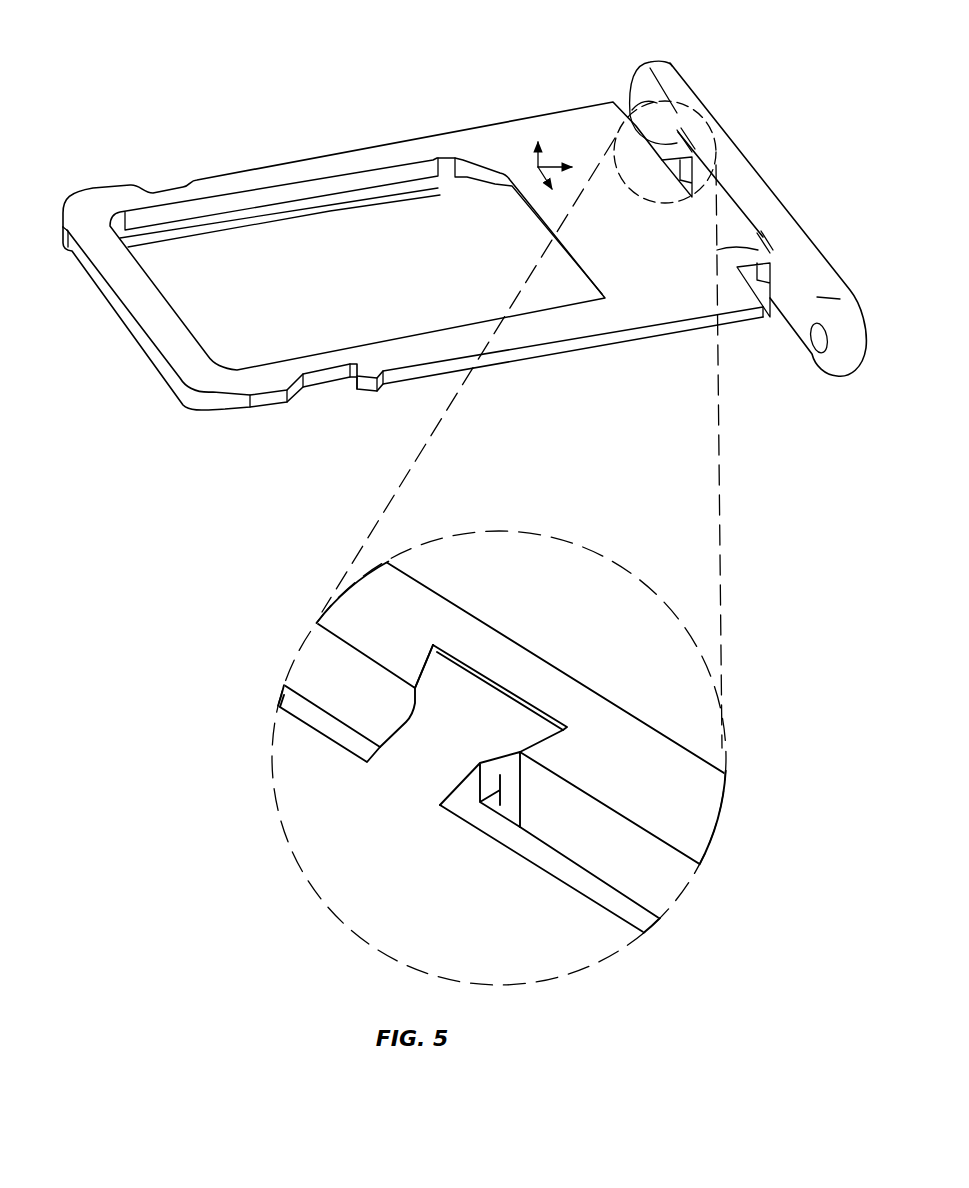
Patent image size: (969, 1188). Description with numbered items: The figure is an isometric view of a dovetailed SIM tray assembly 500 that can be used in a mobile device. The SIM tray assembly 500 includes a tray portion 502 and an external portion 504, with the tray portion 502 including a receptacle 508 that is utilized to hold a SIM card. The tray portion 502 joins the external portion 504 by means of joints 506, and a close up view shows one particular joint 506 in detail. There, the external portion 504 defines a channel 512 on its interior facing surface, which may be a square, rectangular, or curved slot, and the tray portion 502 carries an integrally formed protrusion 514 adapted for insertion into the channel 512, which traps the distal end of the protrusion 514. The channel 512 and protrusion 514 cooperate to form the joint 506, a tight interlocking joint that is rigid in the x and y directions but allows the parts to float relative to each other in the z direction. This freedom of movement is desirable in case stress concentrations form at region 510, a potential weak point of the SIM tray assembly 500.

The SIM tray assembly 500 is at (193, 107).
The tray portion 502 is at (320, 150).
The external portion 504 is at (753, 170).
The joint 506 is at (760, 287).
The receptacle 508 is at (356, 318).
The region 510 is at (580, 65).
The channel 512 is at (504, 684).
The protrusion 514 is at (457, 701).